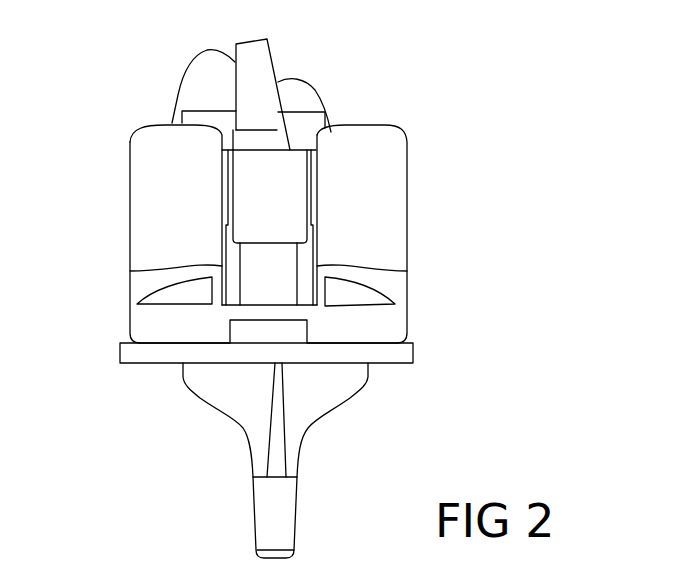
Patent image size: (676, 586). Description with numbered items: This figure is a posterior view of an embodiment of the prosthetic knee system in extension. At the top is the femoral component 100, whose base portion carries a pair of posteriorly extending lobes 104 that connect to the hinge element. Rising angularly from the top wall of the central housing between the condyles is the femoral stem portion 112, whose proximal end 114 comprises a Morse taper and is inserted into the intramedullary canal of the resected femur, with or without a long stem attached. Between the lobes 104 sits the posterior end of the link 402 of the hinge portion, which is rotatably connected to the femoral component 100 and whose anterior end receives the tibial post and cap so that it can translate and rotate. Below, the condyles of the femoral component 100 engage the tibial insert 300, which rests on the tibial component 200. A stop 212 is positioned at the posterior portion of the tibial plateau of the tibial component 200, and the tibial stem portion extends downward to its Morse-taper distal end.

The femoral component 100 is at (117, 52).
The posteriorly extending lobes 104 is at (143, 173).
The femoral stem portion 112 is at (268, 133).
The proximal end 114 is at (253, 80).
The link 402 is at (292, 167).
The tibial insert 300 is at (118, 310).
The tibial component 200 is at (110, 355).
The stop 212 is at (288, 335).